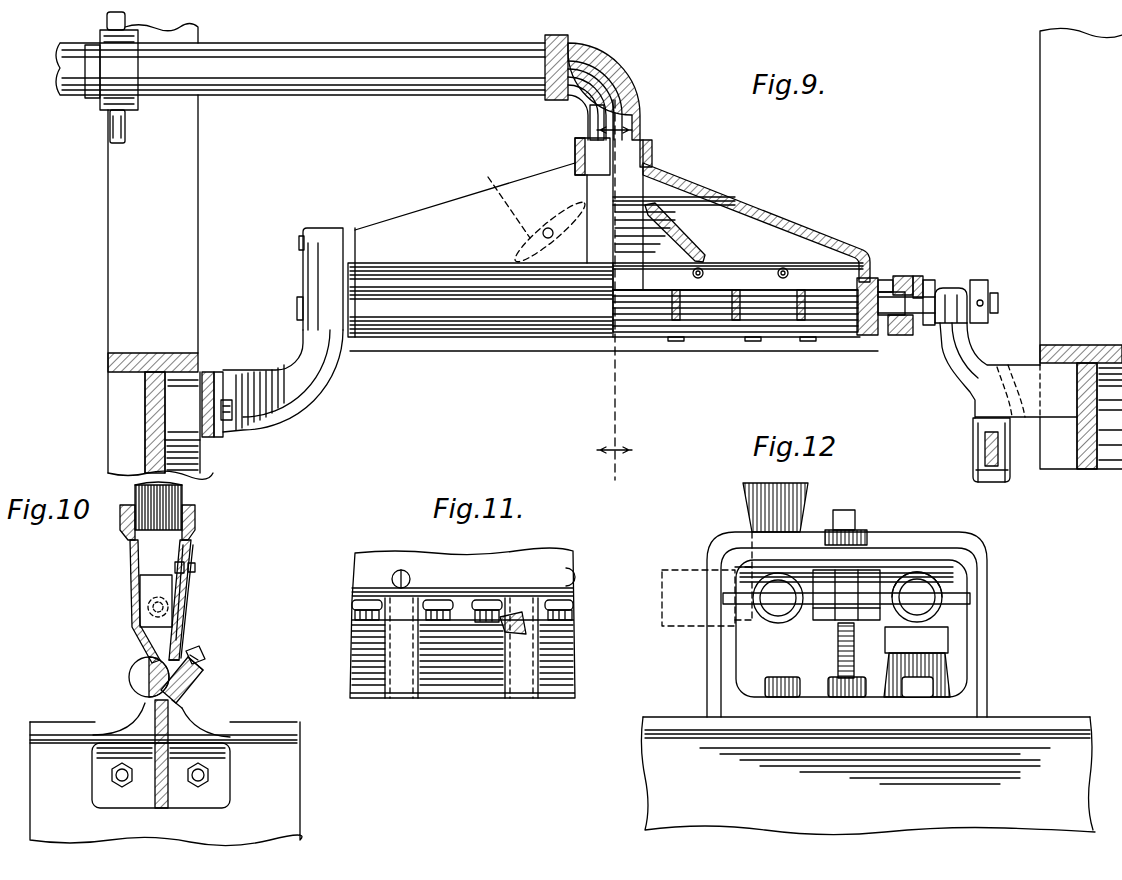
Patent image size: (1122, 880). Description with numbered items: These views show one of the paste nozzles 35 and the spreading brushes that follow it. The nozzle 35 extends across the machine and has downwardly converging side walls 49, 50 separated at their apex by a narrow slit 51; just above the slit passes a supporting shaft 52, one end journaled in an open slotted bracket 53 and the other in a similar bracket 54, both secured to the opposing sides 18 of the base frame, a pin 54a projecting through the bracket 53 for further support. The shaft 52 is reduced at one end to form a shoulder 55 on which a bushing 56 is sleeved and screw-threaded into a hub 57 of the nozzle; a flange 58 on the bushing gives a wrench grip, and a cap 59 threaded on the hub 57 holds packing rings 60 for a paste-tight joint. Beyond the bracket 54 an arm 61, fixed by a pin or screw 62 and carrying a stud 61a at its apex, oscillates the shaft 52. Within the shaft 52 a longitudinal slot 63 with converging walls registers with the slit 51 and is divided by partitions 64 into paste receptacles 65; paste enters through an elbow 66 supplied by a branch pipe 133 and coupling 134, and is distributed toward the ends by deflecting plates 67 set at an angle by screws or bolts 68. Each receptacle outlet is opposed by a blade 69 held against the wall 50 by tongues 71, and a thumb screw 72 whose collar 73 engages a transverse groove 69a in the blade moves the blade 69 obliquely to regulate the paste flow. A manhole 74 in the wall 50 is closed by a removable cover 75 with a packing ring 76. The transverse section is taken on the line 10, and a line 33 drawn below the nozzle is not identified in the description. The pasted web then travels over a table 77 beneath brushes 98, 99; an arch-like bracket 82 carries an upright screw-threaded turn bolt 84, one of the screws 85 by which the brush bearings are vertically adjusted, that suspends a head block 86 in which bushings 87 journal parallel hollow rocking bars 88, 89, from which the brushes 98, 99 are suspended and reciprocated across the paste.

In FIG. 9, the section line 10 is at (641, 289).
In FIG. 9, the side of the base frame 18 is at (108, 408).
In FIG. 10, the side of the base frame 18 is at (45, 769).
In FIG. 12, the side of the base frame 18 is at (833, 797).
In FIG. 9, the base line 33 is at (505, 353).
In FIG. 9, the nozzle 35 is at (722, 192).
In FIG. 10, the nozzle 35 is at (195, 508).
In FIG. 9, the side wall 49 is at (480, 218).
In FIG. 10, the side wall 49 is at (128, 573).
In FIG. 10, the side wall 50 is at (187, 558).
In FIG. 10, the slit 51 is at (190, 710).
In FIG. 9, the supporting shaft 52 is at (297, 306).
In FIG. 10, the supporting shaft 52 is at (135, 680).
In FIG. 9, the open slotted bracket 53 is at (272, 383).
In FIG. 10, the open slotted bracket 53 is at (95, 790).
In FIG. 9, the bracket 54 is at (970, 390).
In FIG. 9, the pin 54a is at (350, 230).
In FIG. 9, the shoulder 55 is at (872, 336).
In FIG. 9, the bushing 56 is at (898, 336).
In FIG. 9, the hub 57 is at (886, 278).
In FIG. 9, the flange 58 is at (918, 276).
In FIG. 9, the cap 59 is at (932, 280).
In FIG. 9, the packing rings 60 is at (905, 276).
In FIG. 9, the arm 61 is at (990, 336).
In FIG. 9, the stud 61a is at (973, 446).
In FIG. 9, the pin or screw 62 is at (982, 300).
In FIG. 10, the slot 63 is at (140, 665).
In FIG. 9, the partitions 64 is at (728, 316).
In FIG. 9, the paste containing receptacles 65 is at (693, 316).
In FIG. 9, the elbow 66 is at (588, 108).
In FIG. 10, the elbow 66 is at (182, 490).
In FIG. 9, the deflecting plates 67 is at (697, 160).
In FIG. 10, the deflecting plates 67 is at (147, 590).
In FIG. 9, the screws or bolts 68 is at (548, 228).
In FIG. 10, the screws or bolts 68 is at (137, 610).
In FIG. 9, the blade 69 is at (780, 332).
In FIG. 10, the blade 69 is at (190, 688).
In FIG. 11, the blade 69 is at (566, 666).
In FIG. 10, the transverse groove 69a is at (200, 665).
In FIG. 9, the tongues 71 is at (738, 322).
In FIG. 11, the tongues 71 is at (398, 693).
In FIG. 10, the thumb screws 72 is at (202, 653).
In FIG. 11, the thumb screws 72 is at (432, 598).
In FIG. 10, the collar or flange 73 is at (183, 652).
In FIG. 11, the collar or flange 73 is at (524, 612).
In FIG. 10, the manhole 74 is at (195, 570).
In FIG. 10, the removable cover 75 is at (187, 587).
In FIG. 11, the removable cover 75 is at (500, 556).
In FIG. 10, the packing ring 76 is at (180, 567).
In FIG. 10, the table 77 is at (68, 715).
In FIG. 12, the table 77 is at (808, 702).
In FIG. 12, the arch like bracket 82 is at (980, 641).
In FIG. 12, the screw-threaded turn bolt 84 is at (837, 643).
In FIG. 12, the screw 85 is at (846, 512).
In FIG. 12, the head block 86 is at (878, 622).
In FIG. 12, the bushings 87 is at (968, 599).
In FIG. 12, the hollow rocking bar 88 is at (772, 617).
In FIG. 12, the hollow rocking bar 89 is at (928, 597).
In FIG. 12, the brush 98 is at (950, 680).
In FIG. 12, the brush 99 is at (743, 493).
In FIG. 9, the branch pipe 133 is at (345, 86).
In FIG. 9, the coupling 134 is at (95, 100).